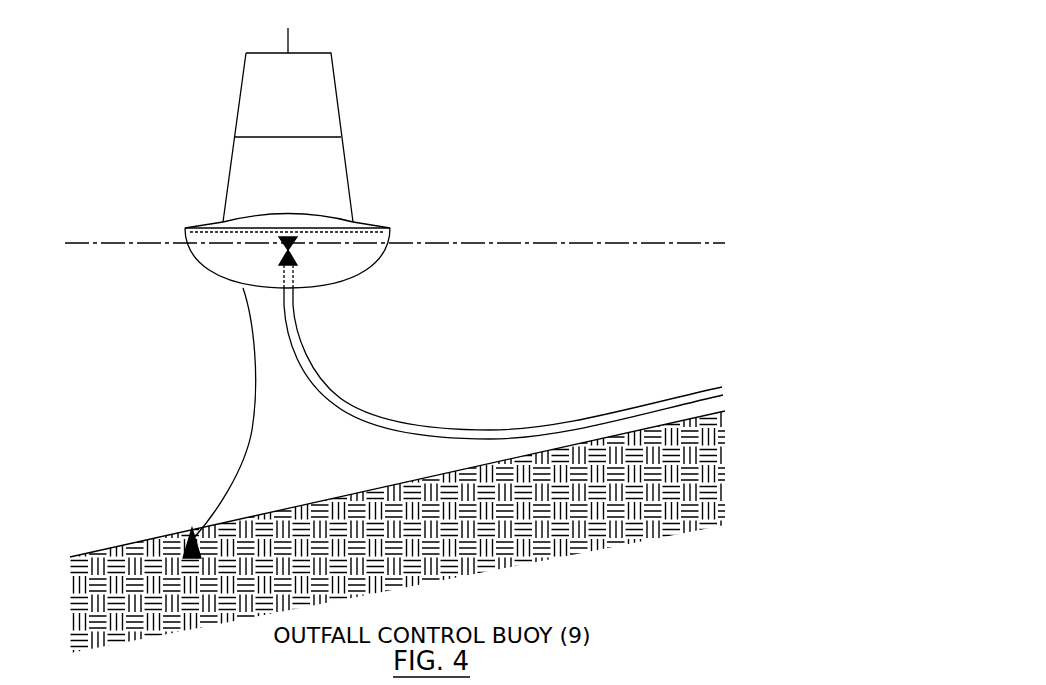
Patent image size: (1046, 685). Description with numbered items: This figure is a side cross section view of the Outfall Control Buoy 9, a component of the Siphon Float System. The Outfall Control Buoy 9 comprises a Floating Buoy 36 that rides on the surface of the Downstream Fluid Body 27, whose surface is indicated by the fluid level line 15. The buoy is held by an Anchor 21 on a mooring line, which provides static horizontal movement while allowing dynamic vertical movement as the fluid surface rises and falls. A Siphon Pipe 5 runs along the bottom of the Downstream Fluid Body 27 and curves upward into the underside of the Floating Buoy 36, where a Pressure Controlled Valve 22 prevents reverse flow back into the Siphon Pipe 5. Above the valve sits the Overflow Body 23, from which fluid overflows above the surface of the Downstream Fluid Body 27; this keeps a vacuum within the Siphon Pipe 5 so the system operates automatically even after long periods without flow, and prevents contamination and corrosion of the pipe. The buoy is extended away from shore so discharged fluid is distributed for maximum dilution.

The Outfall Control Buoy 9 is at (308, 158).
The Floating Buoy 36 is at (345, 94).
The Overflow Body 23 is at (270, 226).
The Pressure Controlled Valve 22 is at (270, 253).
The Emergency Fluid Level 15 is at (573, 241).
The Downstream Fluid Body 27 is at (600, 325).
The Siphon Pipe 5 is at (572, 413).
The Anchor 21 is at (230, 452).